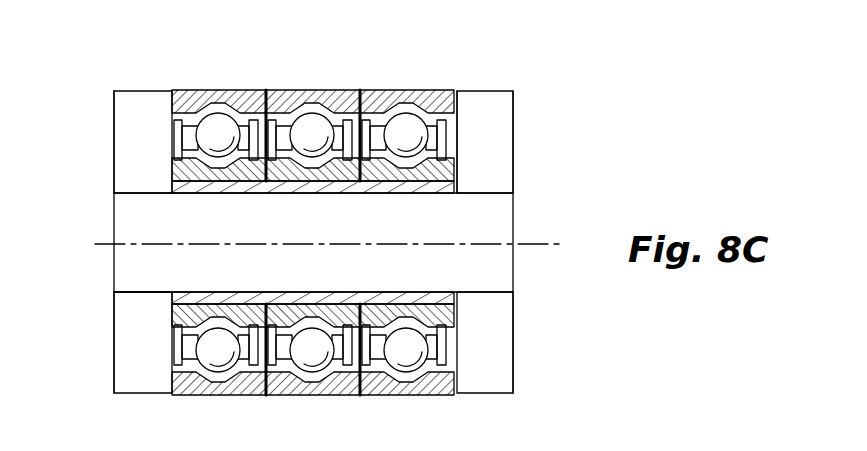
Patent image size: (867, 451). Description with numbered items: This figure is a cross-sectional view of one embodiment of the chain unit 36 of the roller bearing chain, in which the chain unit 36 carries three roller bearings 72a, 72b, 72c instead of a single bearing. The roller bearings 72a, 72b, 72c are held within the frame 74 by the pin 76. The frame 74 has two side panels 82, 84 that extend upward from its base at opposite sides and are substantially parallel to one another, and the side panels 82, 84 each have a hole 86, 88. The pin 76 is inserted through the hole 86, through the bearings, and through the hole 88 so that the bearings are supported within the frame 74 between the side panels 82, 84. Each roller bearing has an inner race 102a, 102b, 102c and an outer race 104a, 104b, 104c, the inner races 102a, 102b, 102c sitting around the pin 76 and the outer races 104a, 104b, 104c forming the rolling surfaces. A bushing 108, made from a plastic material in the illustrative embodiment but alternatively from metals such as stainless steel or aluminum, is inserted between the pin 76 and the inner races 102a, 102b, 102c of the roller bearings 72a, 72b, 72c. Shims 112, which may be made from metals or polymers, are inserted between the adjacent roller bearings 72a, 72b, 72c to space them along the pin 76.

The chain unit 36 is at (550, 124).
The roller bearing 72a is at (466, 118).
The roller bearing 72b is at (324, 135).
The roller bearing 72c is at (160, 110).
The frame 74 is at (514, 119).
The pin 76 is at (157, 222).
The side panel 82 is at (132, 357).
The side panel 84 is at (497, 142).
The hole 86 is at (113, 292).
The hole 88 is at (513, 292).
The inner race 102a is at (445, 170).
The inner race 102b is at (328, 176).
The inner race 102c is at (183, 168).
The outer race 104a is at (441, 91).
The outer race 104b is at (291, 90).
The outer race 104c is at (247, 101).
The bushing 108 is at (185, 187).
The shim 112 is at (266, 395).